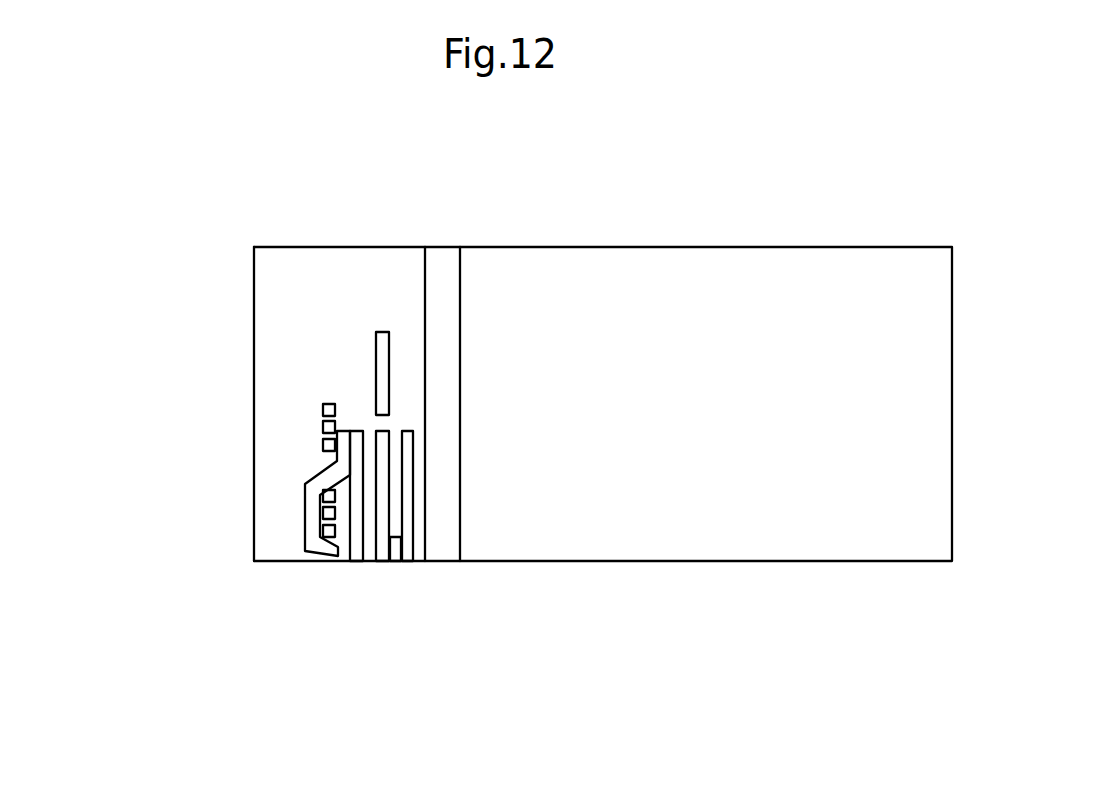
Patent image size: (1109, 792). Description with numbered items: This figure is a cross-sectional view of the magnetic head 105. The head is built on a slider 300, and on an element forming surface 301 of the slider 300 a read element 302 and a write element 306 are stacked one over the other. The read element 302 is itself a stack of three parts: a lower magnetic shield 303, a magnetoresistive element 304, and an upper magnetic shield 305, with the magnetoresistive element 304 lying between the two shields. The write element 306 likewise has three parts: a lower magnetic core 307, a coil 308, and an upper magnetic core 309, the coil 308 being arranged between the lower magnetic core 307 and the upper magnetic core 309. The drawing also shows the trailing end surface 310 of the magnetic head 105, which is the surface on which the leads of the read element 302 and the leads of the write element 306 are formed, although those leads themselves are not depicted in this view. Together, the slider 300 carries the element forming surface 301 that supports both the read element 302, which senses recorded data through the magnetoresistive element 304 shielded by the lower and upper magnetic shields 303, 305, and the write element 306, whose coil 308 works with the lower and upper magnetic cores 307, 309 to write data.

The magnetic head 105 is at (768, 198).
The slider 300 is at (683, 247).
The element forming surface 301 is at (459, 287).
The read element 302 is at (252, 588).
The lower magnetic shield 303 is at (403, 562).
The magnetoresistive element 304 is at (393, 562).
The upper magnetic shield 305 is at (382, 562).
The write element 306 is at (122, 405).
The lower magnetic core 307 is at (355, 562).
The coil 308 is at (313, 492).
The upper magnetic core 309 is at (313, 470).
The trailing end surface 310 is at (254, 298).